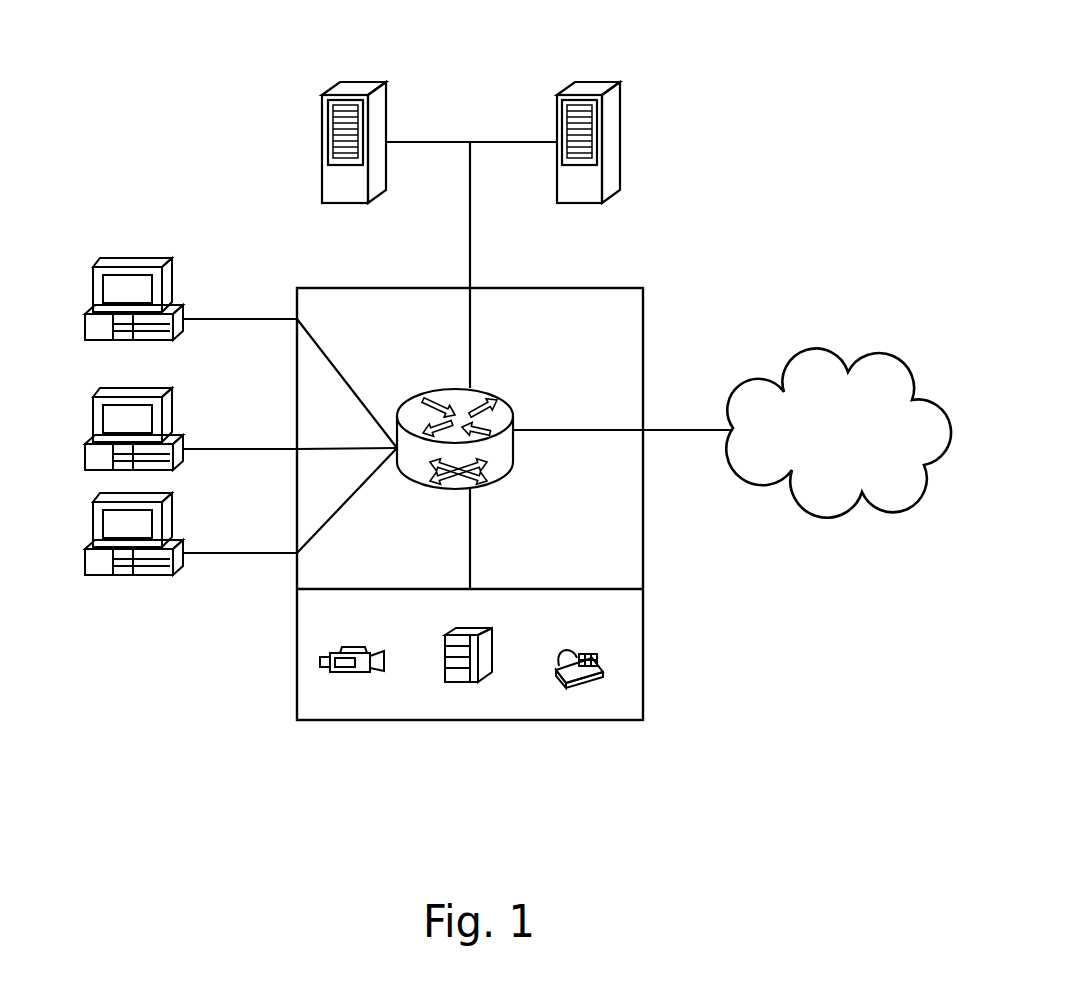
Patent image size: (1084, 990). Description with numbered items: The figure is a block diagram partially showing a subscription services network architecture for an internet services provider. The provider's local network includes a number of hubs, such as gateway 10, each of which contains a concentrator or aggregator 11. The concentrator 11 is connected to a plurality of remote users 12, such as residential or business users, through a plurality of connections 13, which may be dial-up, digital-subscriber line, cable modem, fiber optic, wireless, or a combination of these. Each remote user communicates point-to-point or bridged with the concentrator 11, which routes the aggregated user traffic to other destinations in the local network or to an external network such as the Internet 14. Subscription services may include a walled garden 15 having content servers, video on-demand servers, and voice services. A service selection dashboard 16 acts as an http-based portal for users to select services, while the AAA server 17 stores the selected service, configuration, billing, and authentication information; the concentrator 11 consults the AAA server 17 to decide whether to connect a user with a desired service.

The gateway 10 is at (643, 318).
The concentrator 11 is at (513, 420).
The remote users 12 is at (137, 238).
The connections 13 is at (222, 588).
The Internet 14 is at (835, 507).
The walled garden 15 is at (643, 643).
The service selection dashboard 16 is at (620, 133).
The AAA server 17 is at (322, 112).